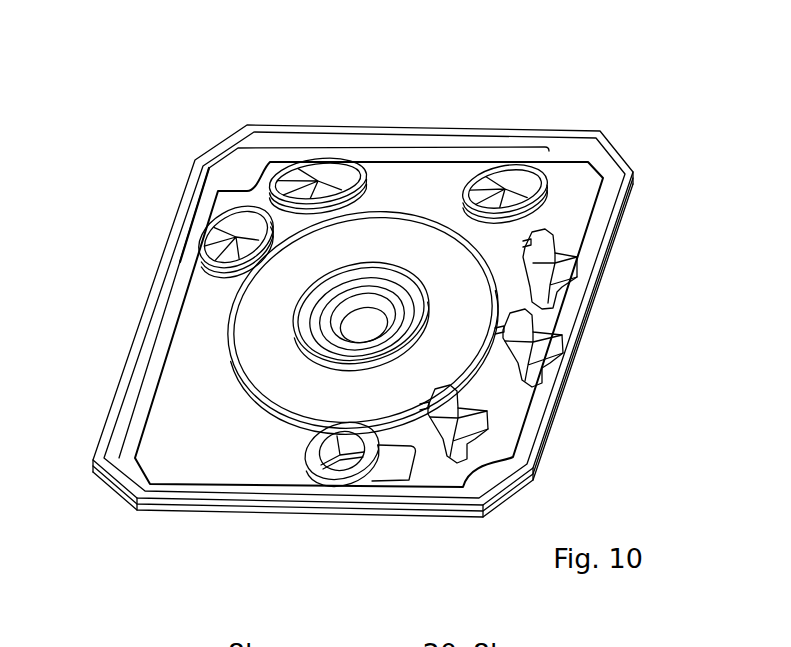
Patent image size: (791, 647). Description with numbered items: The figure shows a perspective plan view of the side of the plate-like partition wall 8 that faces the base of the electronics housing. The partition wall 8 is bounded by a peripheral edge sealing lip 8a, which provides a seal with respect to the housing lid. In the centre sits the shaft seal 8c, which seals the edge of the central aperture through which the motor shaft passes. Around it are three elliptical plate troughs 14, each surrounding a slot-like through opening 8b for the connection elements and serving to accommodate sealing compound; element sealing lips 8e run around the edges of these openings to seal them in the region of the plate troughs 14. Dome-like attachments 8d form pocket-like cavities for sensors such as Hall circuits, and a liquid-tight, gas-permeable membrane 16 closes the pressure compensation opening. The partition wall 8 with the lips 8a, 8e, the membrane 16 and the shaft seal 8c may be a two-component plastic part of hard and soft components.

The partition wall 8 is at (179, 550).
The edge sealing lip 8a is at (606, 156).
The through openings 8b is at (527, 160).
The shaft seal 8c is at (300, 322).
The dome-like attachments 8d is at (553, 252).
The element sealing lips 8e is at (220, 222).
The plate troughs 14 is at (207, 226).
The membrane 16 is at (341, 456).